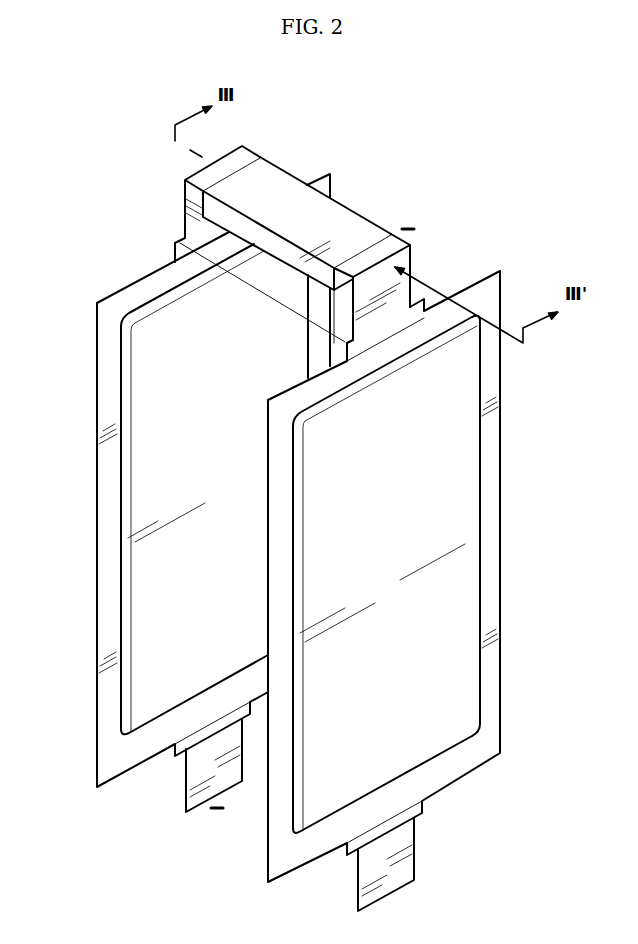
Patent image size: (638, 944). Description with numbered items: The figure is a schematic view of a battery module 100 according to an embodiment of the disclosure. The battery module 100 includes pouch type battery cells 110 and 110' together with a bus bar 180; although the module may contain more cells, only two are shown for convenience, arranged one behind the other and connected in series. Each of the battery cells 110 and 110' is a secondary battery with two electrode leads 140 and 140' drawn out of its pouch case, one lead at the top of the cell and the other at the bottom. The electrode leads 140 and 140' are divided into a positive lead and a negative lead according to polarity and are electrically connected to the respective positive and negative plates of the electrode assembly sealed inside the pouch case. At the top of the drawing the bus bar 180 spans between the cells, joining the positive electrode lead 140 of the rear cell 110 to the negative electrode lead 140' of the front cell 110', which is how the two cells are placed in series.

The battery module 100 is at (400, 145).
The battery cell 110 is at (177, 470).
The battery cell 110' is at (373, 559).
The electrode lead 140 is at (216, 470).
The electrode lead 140' is at (370, 559).
The bus bar 180 is at (337, 210).